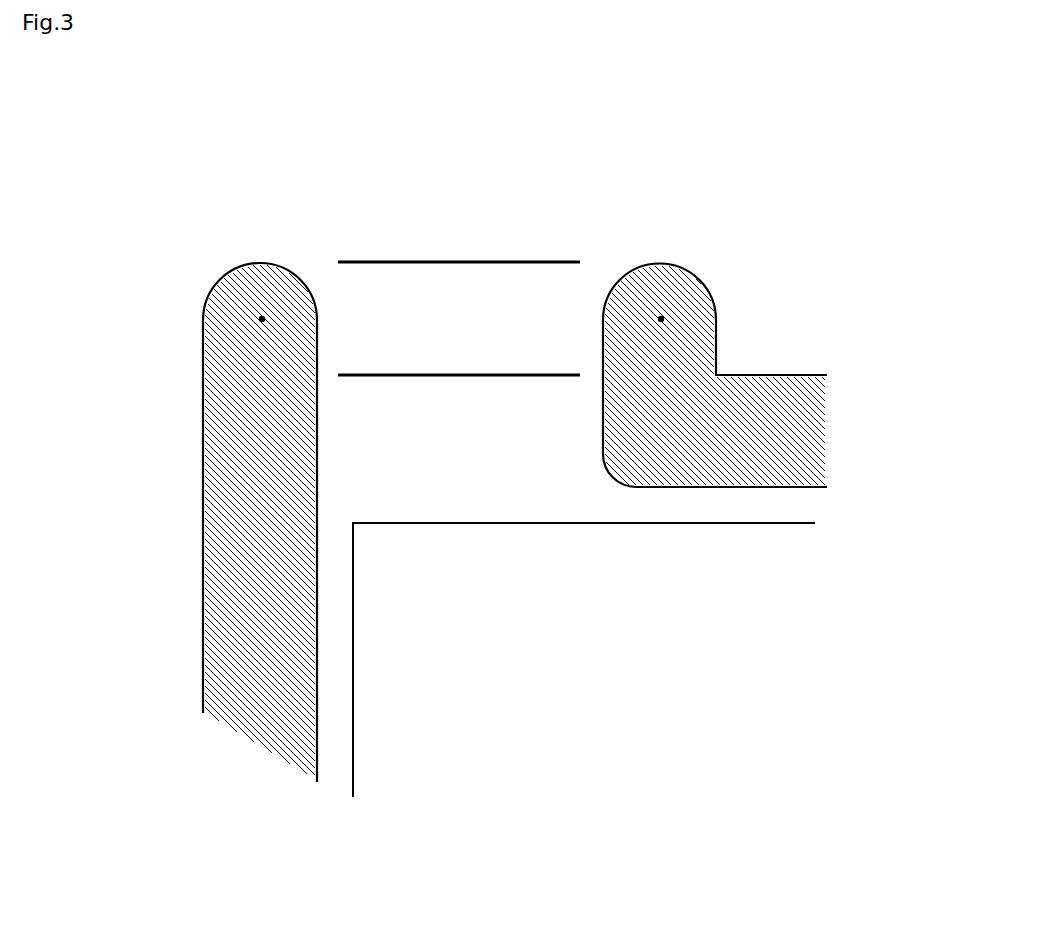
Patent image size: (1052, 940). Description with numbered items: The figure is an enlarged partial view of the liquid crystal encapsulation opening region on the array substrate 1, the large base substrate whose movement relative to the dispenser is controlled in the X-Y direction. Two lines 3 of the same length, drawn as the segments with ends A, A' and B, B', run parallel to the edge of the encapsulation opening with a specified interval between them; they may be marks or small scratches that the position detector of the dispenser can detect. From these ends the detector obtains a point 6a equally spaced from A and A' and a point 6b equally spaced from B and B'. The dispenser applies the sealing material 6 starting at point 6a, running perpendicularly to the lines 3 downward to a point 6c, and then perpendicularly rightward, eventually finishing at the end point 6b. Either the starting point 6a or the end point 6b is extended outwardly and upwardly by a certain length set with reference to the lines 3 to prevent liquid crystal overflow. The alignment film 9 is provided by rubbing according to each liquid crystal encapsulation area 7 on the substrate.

The large base substrate 1 is at (700, 750).
The line 3 is at (543, 375).
The sealing material 6 is at (225, 405).
The point 6a is at (661, 319).
The point 6b is at (262, 319).
The point 6c is at (662, 440).
The liquid crystal encapsulation area 7 is at (420, 688).
The alignment film 9 is at (353, 553).